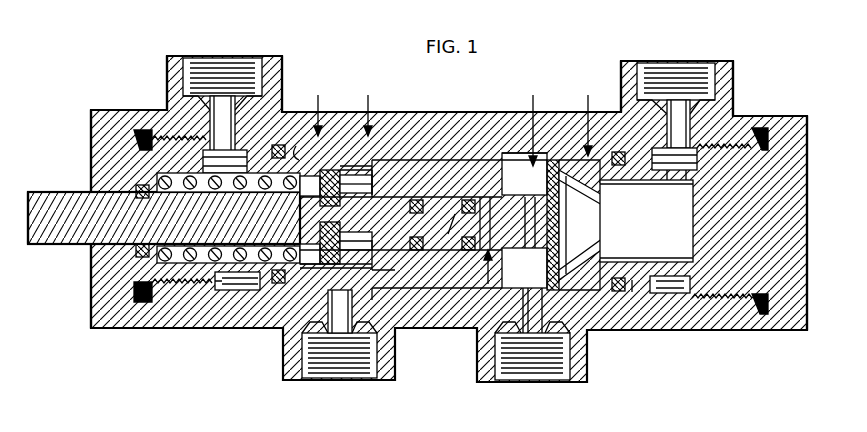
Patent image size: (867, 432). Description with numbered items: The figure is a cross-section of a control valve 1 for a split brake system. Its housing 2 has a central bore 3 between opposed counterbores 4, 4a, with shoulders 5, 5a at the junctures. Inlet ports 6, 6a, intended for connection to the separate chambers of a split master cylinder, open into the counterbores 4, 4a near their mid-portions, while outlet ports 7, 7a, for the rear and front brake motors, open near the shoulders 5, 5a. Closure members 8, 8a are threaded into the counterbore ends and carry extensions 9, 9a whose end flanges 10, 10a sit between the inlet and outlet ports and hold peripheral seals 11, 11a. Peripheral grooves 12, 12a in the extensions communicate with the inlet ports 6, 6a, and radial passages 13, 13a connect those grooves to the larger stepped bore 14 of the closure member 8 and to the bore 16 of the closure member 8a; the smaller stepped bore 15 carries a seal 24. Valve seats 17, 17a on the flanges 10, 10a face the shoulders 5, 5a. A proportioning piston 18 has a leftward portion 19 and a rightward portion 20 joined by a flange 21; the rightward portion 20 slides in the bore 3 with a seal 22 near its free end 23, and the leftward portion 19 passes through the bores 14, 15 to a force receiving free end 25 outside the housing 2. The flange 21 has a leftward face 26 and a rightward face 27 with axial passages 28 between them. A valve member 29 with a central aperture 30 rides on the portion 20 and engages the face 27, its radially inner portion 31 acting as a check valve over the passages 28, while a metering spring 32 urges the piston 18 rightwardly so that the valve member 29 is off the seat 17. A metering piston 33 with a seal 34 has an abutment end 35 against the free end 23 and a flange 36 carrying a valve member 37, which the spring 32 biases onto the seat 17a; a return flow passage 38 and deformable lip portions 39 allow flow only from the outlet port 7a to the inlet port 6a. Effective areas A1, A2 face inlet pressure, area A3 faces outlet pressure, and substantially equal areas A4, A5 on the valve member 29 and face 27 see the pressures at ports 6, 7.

The control valve 1 is at (142, 52).
The housing 2 is at (445, 122).
The bore 3 is at (392, 252).
The counterbore 4 is at (370, 290).
The counterbore 4a is at (506, 292).
The shoulder 5 is at (368, 165).
The shoulder 5a is at (506, 158).
The inlet port 6 is at (246, 70).
The inlet port 6a is at (706, 74).
The outlet port 7 is at (366, 378).
The outlet port 7a is at (566, 380).
The closure member 8 is at (108, 112).
The closure member 8a is at (786, 120).
The extension 9 is at (196, 292).
The extension 9a is at (694, 300).
The end flange 10 is at (262, 290).
The end flange 10a is at (640, 294).
The peripheral seal 11 is at (276, 145).
The peripheral seal 11a is at (618, 150).
The peripheral groove 12 is at (214, 280).
The peripheral groove 12a is at (692, 286).
The radially extending passages 13 is at (212, 170).
The radially extending passages 13a is at (690, 168).
The larger stepped bore 14 is at (224, 246).
The smaller stepped bore 15 is at (106, 243).
The bore 16 is at (694, 262).
The valve seat 17 is at (297, 140).
The valve seat 17a is at (606, 293).
The piston 18 is at (55, 250).
The leftward portion 19 is at (154, 226).
The rightward portion 20 is at (434, 252).
The flange 21 is at (338, 311).
The peripheral seal 22 is at (418, 198).
The free end 23 is at (452, 236).
The peripheral seal 24 is at (140, 178).
The free end 25 is at (46, 194).
The leftward face 26 is at (326, 170).
The rightward face 27 is at (346, 175).
The passages 28 is at (358, 188).
The valve member 29 is at (322, 284).
The central aperture 30 is at (322, 214).
The radially inner portion 31 is at (332, 246).
The metering spring 32 is at (152, 258).
The metering piston 33 is at (630, 216).
The peripheral seal 34 is at (476, 195).
The abutment end 35 is at (417, 236).
The flange 36 is at (546, 186).
The valve member 37 is at (556, 158).
The return flow passage 38 is at (526, 230).
The deformable lip portions 39 is at (628, 228).
The effective area A1 is at (592, 113).
The effective area A2 is at (478, 269).
The effective area A3 is at (537, 118).
The effective area A4 is at (319, 103).
The effective area A5 is at (369, 103).